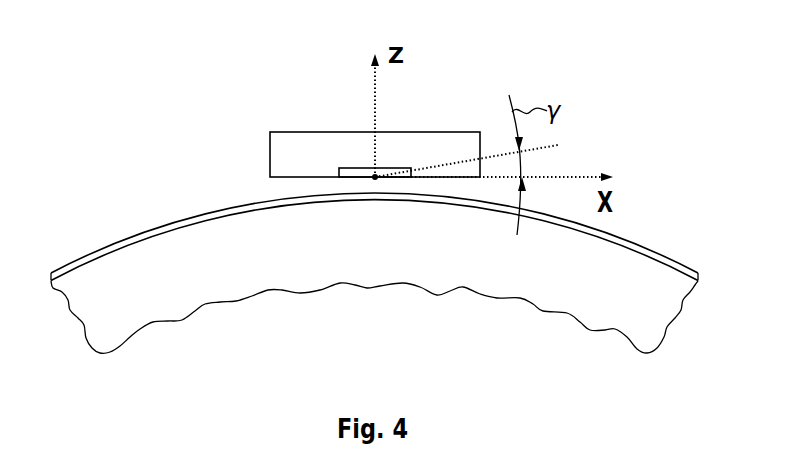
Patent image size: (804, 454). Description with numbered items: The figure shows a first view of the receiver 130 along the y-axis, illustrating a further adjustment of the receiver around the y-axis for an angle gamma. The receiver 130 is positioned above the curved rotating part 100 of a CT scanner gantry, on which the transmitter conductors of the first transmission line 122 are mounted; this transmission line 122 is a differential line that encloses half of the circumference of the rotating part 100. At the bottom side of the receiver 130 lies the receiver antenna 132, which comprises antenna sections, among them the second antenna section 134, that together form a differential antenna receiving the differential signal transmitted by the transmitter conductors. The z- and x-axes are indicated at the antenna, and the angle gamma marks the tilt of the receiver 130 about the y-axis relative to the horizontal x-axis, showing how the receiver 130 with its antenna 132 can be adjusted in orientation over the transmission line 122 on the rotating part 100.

The rotating part 100 is at (373, 270).
The first transmission line 122 is at (157, 228).
The receiver 130 is at (299, 110).
The receiver antenna 132 is at (357, 160).
The second antenna section 134 is at (385, 168).